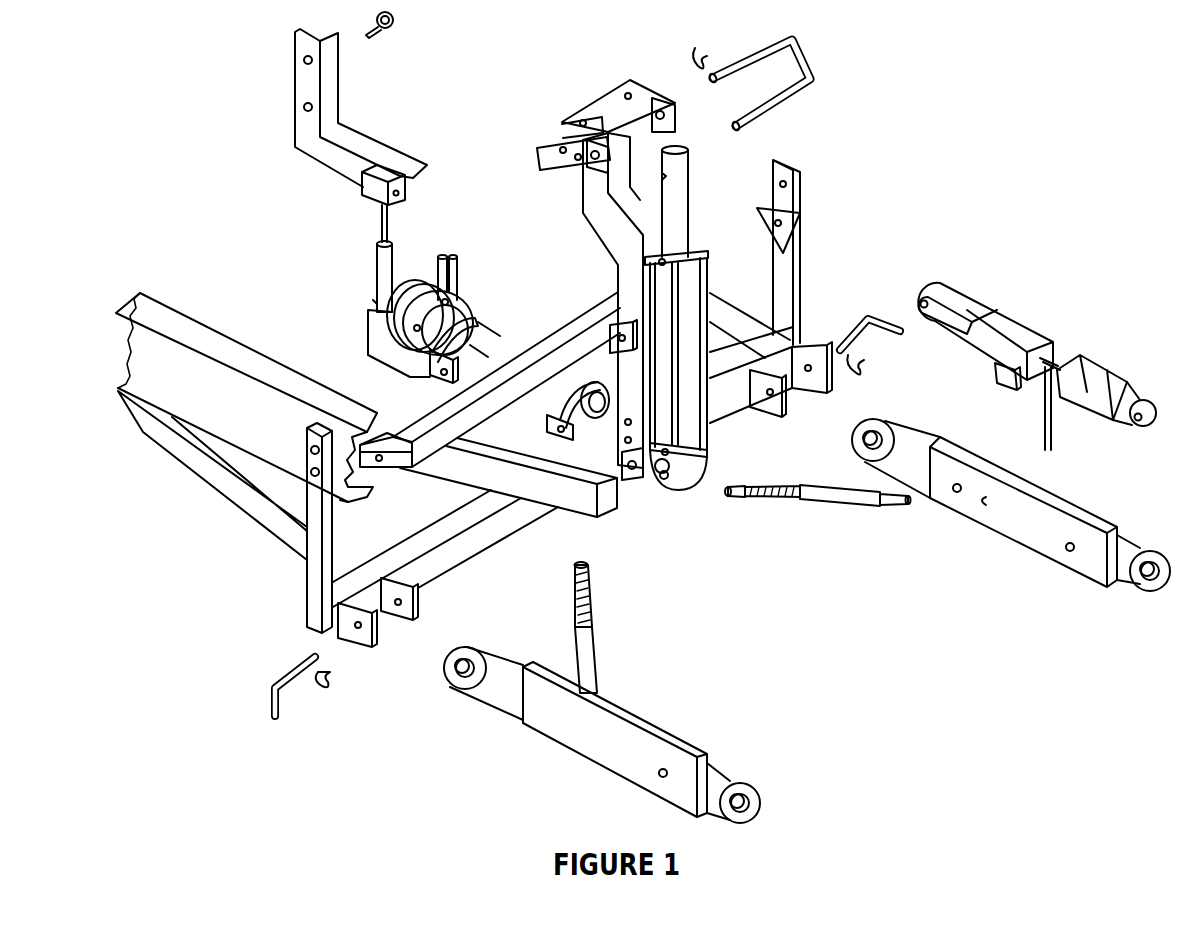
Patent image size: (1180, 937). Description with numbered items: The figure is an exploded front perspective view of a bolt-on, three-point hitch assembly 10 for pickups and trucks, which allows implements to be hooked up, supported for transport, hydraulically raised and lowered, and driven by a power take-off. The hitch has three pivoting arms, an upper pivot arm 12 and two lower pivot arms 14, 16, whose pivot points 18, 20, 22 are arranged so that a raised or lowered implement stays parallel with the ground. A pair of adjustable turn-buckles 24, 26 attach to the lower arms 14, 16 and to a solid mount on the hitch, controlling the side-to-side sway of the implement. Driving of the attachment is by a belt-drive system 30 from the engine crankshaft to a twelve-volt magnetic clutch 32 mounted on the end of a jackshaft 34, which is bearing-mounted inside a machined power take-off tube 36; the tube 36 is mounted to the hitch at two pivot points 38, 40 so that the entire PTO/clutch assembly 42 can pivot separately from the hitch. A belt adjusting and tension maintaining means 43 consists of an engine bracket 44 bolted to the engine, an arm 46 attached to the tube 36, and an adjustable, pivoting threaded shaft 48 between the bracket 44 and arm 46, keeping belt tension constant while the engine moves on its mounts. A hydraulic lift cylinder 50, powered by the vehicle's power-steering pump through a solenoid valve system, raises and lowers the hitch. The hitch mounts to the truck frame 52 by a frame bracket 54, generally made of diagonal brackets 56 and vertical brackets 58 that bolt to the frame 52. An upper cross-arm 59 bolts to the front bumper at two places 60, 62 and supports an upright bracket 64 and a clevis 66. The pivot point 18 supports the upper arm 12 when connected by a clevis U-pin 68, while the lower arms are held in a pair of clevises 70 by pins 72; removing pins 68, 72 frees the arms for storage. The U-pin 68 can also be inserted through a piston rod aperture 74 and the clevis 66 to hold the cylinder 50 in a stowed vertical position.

The hitch assembly 10 is at (858, 127).
The upper pivot arm 12 is at (1000, 327).
The lower pivot arm 14 is at (647, 746).
The lower pivot arm 16 is at (1032, 548).
The pivot point 18 is at (650, 101).
The pivot point 20 is at (362, 638).
The pivot point 22 is at (812, 347).
The adjustable turn-buckle 24 is at (588, 640).
The adjustable turn-buckle 26 is at (836, 499).
The belt-drive system 30 is at (454, 259).
The 12-volt magnetic clutch 32 is at (448, 302).
The jackshaft 34 is at (598, 422).
The power take-off tube 36 is at (490, 333).
The pivot point 38 is at (408, 373).
The pivot point 40 is at (493, 466).
The PTO/clutch assembly 42 is at (540, 306).
The belt adjusting and tension maintaining means 43 is at (252, 202).
The engine bracket 44 is at (297, 88).
The arm 46 is at (378, 262).
The threaded shaft 48 is at (378, 212).
The hydraulic lift cylinder 50 is at (695, 428).
The truck frame 52 is at (213, 343).
The frame bracket 54 is at (213, 656).
The diagonal bracket 56 is at (185, 467).
The vertical bracket 58 is at (305, 592).
The upper cross-arm 59 is at (506, 379).
The bumper bolting location 60 is at (381, 461).
The bumper bolting location 62 is at (795, 212).
The upright bracket 64 is at (590, 191).
The clevis 66 is at (657, 110).
The clevis U-pin 68 is at (808, 46).
The clevis 70 is at (398, 614).
The pin 72 is at (270, 706).
The piston rod aperture 74 is at (686, 183).